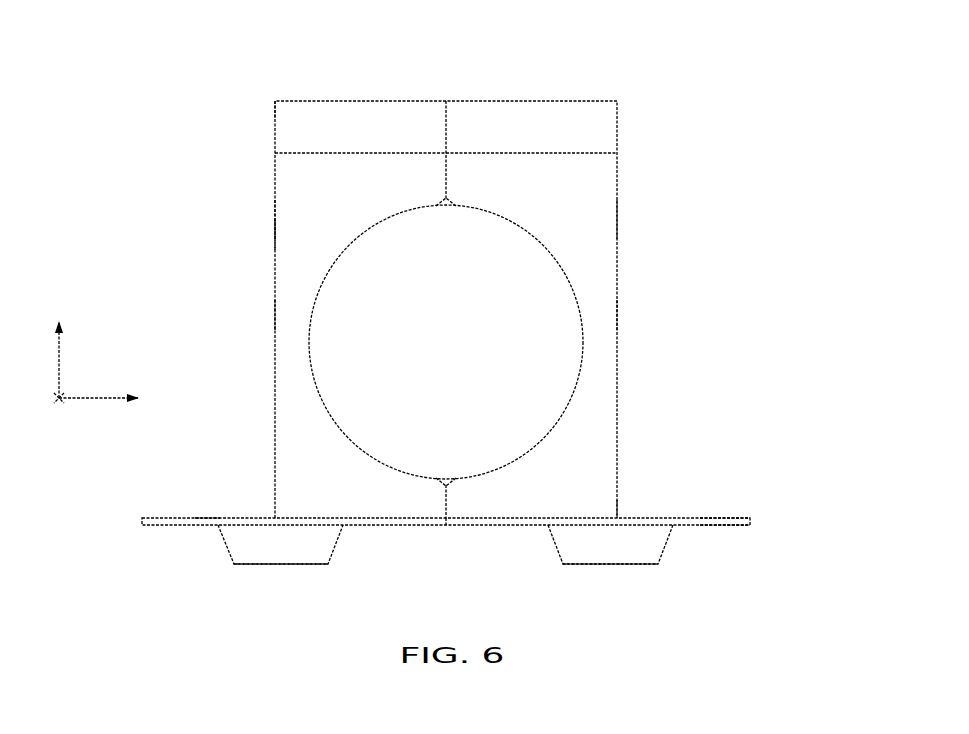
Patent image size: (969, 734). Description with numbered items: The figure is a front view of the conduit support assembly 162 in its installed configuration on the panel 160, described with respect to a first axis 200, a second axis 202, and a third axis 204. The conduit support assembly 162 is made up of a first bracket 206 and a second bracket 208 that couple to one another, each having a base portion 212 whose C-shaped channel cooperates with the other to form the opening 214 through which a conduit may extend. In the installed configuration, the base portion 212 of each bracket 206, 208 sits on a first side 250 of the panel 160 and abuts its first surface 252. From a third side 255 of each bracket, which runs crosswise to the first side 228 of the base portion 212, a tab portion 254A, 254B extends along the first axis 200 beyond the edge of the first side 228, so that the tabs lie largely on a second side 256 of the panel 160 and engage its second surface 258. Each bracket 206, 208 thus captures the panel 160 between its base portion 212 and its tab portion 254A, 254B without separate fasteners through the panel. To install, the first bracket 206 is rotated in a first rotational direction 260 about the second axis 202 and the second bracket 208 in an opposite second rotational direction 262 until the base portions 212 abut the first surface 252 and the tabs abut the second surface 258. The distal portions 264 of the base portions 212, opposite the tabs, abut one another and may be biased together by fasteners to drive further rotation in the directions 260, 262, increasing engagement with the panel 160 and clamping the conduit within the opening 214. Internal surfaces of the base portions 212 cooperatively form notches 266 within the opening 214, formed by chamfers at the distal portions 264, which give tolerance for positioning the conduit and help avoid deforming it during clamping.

The panel 160 is at (140, 512).
The conduit support assembly 162 is at (178, 228).
The first axis 200 is at (93, 398).
The second axis 202 is at (54, 400).
The third axis 204 is at (59, 365).
The first bracket 206 is at (700, 108).
The second bracket 208 is at (193, 110).
The base portion 212 is at (172, 308).
The opening 214 is at (428, 374).
The first side of base portion 228 is at (755, 497).
The first side of panel 250 is at (690, 505).
The first surface 252 is at (203, 517).
The tab portion of first bracket 254A is at (630, 548).
The tab portion of second bracket 254B is at (263, 549).
The third side 255 is at (313, 545).
The second side of panel 256 is at (722, 535).
The second surface 258 is at (445, 527).
The first rotational direction 260 is at (648, 220).
The second rotational direction 262 is at (244, 220).
The distal portions 264 is at (416, 215).
The notches 266 is at (447, 207).